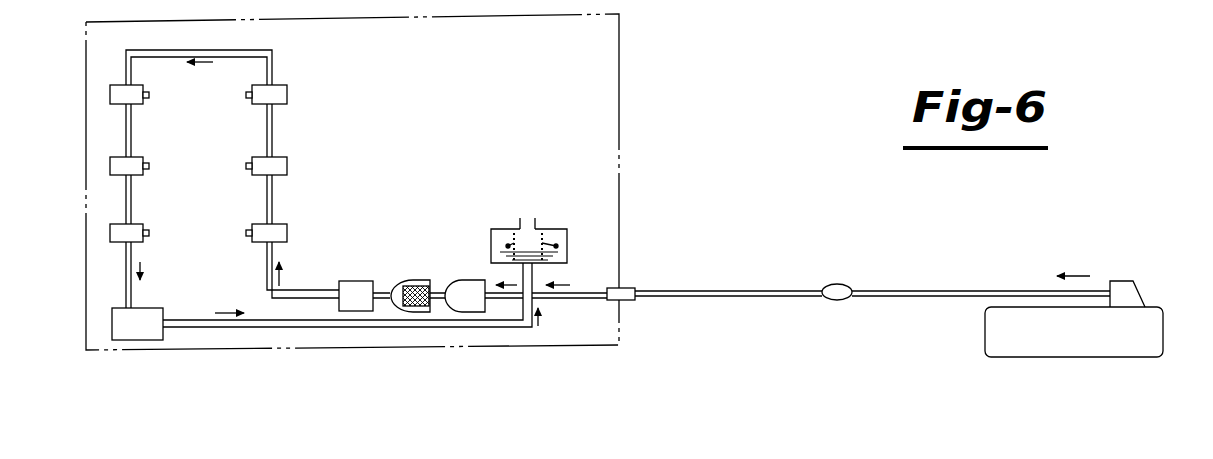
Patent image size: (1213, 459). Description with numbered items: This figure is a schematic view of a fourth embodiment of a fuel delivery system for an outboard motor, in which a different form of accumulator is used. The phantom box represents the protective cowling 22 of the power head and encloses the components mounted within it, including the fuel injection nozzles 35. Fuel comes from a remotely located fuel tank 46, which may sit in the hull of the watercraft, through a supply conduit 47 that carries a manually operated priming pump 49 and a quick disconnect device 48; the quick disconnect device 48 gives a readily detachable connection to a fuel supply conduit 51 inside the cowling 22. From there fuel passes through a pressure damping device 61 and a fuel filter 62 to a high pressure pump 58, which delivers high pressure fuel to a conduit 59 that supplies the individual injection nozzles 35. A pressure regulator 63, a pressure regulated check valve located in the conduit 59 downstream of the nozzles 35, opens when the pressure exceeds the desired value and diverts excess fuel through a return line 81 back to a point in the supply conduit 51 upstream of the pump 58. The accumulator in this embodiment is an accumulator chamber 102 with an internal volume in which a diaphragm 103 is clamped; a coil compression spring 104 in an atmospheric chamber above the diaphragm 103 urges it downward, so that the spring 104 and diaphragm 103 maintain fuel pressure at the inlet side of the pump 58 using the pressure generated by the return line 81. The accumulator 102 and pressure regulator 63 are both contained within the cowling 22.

The protective cowling 22 is at (619, 70).
The conduit 59 is at (234, 169).
The fuel injection nozzles 35 is at (227, 179).
The pressure regulator 63 is at (140, 353).
The return line 81 is at (350, 330).
The pressure damping device 61 is at (364, 266).
The fuel filter 62 is at (418, 257).
The high pressure pump 58 is at (484, 265).
The diaphragm 103 is at (554, 240).
The coil compression spring 104 is at (500, 211).
The accumulator chamber 102 is at (567, 211).
The fuel supply conduit 51 is at (569, 314).
The quick disconnect device 48 is at (643, 323).
The supply conduit 47 is at (872, 327).
The priming pump 49 is at (837, 323).
The fuel tank 46 is at (1042, 317).